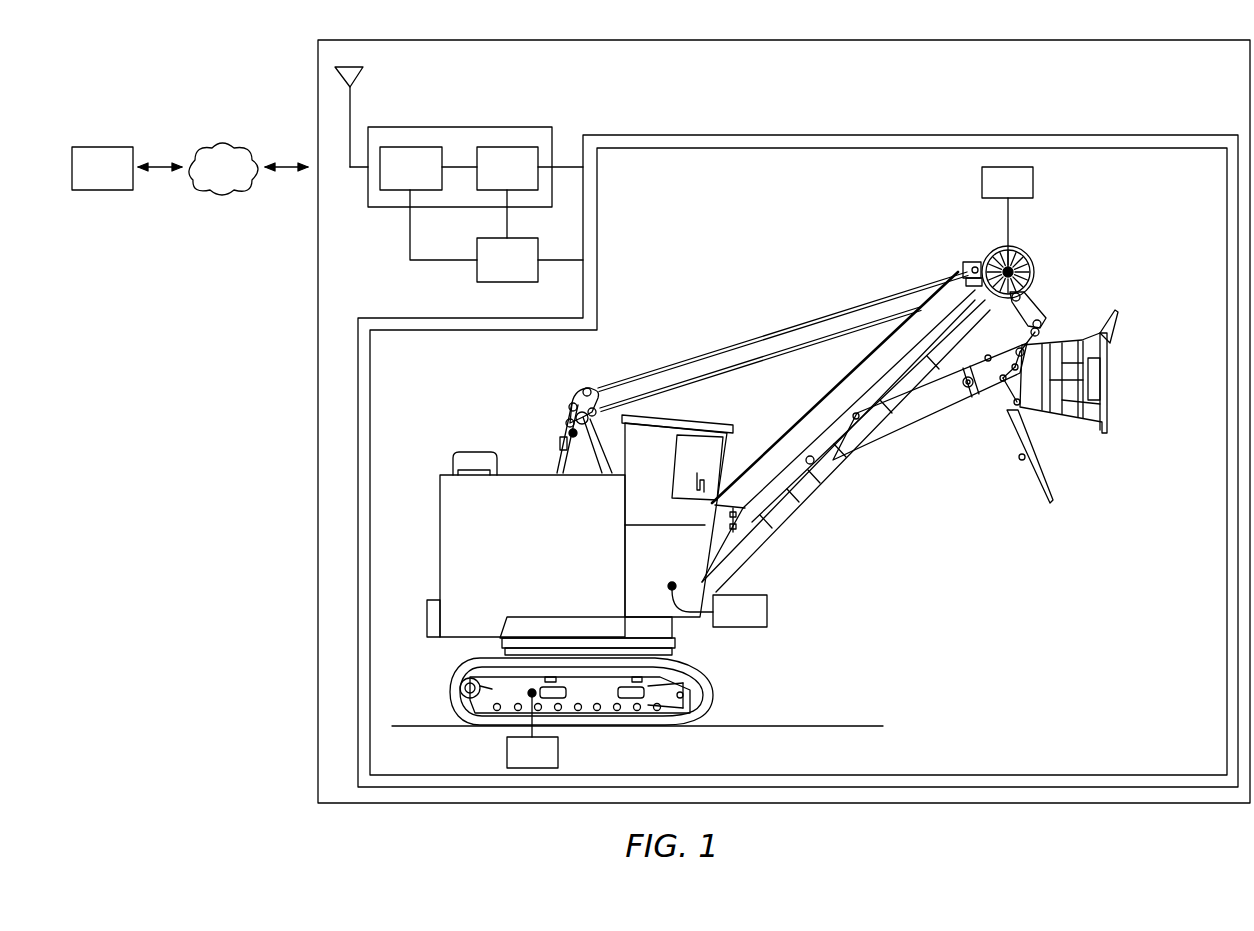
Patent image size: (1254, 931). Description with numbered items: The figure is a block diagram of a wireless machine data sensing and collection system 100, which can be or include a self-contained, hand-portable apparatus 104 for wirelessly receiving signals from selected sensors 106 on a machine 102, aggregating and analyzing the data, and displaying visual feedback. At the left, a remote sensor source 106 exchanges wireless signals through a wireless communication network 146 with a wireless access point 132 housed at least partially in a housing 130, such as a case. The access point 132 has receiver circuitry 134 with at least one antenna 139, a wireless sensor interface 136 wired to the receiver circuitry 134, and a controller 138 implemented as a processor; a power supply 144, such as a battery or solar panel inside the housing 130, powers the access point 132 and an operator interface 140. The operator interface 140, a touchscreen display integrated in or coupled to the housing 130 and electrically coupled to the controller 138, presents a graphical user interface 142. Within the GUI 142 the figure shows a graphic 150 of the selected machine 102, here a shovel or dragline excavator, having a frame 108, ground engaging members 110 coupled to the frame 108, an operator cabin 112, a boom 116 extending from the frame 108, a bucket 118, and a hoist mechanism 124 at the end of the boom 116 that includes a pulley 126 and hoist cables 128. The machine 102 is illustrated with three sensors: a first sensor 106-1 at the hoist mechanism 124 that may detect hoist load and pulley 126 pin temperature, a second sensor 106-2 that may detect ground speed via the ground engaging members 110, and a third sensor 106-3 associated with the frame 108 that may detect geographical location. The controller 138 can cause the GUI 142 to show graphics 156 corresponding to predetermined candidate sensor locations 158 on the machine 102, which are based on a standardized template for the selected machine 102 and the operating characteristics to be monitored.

The wireless machine data sensing and collection system 100 is at (175, 740).
The machine 102 is at (1154, 217).
The apparatus 104 is at (230, 469).
The sensors 106 is at (102, 168).
The first sensor 106-1 is at (1013, 257).
The second sensor 106-2 is at (676, 583).
The third sensor 106-3 is at (530, 696).
The frame 108 is at (673, 628).
The ground engaging members 110 is at (713, 695).
The operator cabin 112 is at (693, 423).
The boom 116 is at (803, 487).
The bucket 118 is at (1107, 390).
The hoist mechanism 124 is at (1056, 260).
The pulley 126 is at (1030, 288).
The hoist cables 128 is at (970, 263).
The housing 130 is at (318, 495).
The wireless access point 132 is at (460, 127).
The receiver circuitry 134 is at (338, 124).
The wireless sensor interface 136 is at (411, 168).
The controller 138 is at (507, 168).
The antenna 139 is at (363, 72).
The operator interface 140 is at (798, 135).
The graphical user interface 142 is at (703, 148).
The power supply 144 is at (507, 260).
The wireless communication network 146 is at (223, 169).
The graphic 150 is at (865, 230).
The graphics 156 is at (1057, 184).
The sensor locations 158 is at (770, 467).